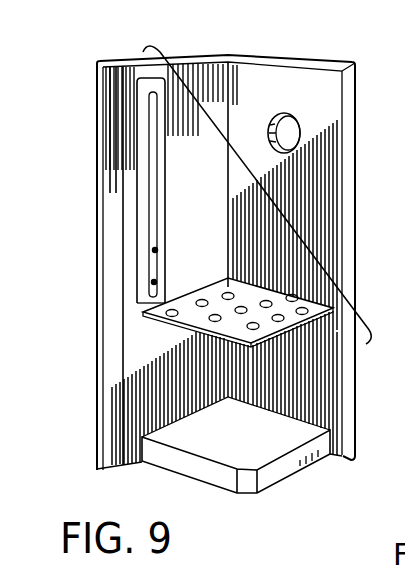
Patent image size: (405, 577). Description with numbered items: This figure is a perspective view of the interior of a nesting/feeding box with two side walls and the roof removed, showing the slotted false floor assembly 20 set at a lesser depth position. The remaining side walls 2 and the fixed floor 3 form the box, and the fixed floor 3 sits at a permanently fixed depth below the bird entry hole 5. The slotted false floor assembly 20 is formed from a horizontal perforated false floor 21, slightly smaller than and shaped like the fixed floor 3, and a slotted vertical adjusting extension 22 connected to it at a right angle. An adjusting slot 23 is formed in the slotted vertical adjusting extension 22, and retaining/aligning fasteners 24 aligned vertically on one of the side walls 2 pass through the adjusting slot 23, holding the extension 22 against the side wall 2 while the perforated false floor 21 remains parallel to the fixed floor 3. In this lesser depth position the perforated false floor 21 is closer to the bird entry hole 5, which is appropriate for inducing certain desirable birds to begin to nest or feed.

The side wall 2 is at (257, 92).
The fixed floor 3 is at (273, 458).
The bird entry hole 5 is at (287, 116).
The slotted false floor assembly 20 is at (262, 185).
The perforated false floor 21 is at (293, 320).
The slotted vertical adjusting extension 22 is at (144, 134).
The adjusting slot 23 is at (155, 193).
The retaining/aligning fasteners 24 is at (155, 250).